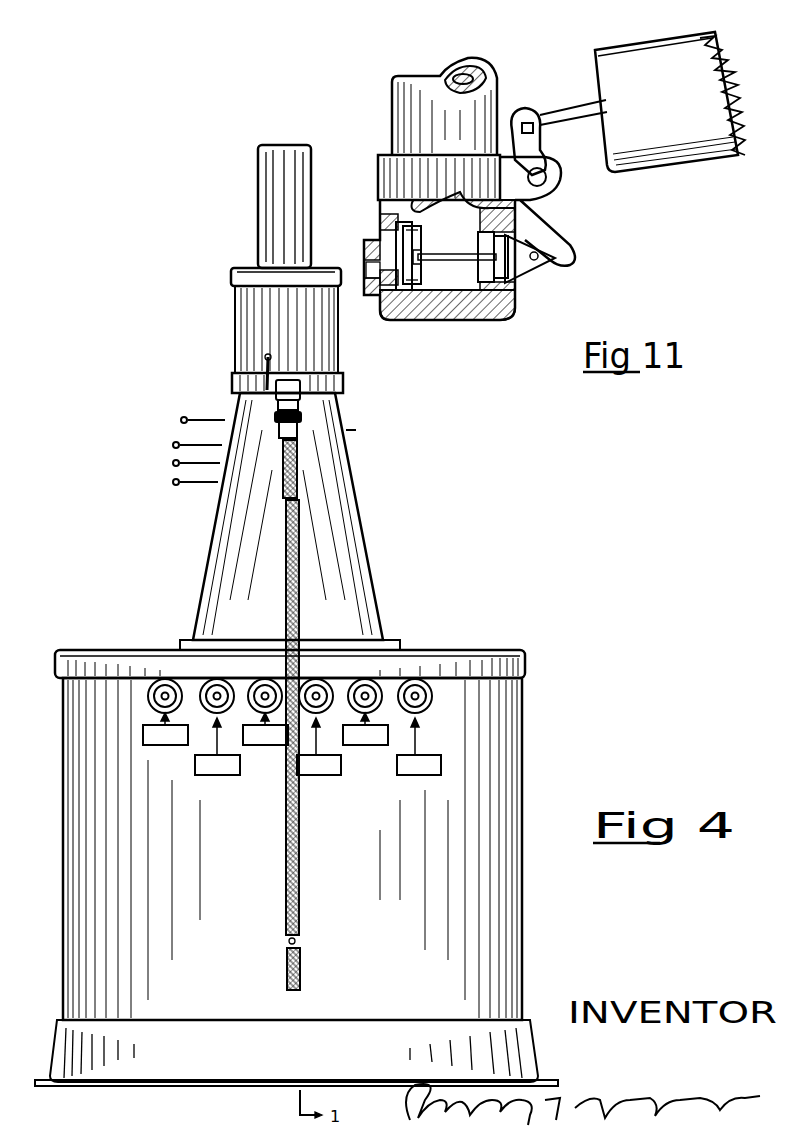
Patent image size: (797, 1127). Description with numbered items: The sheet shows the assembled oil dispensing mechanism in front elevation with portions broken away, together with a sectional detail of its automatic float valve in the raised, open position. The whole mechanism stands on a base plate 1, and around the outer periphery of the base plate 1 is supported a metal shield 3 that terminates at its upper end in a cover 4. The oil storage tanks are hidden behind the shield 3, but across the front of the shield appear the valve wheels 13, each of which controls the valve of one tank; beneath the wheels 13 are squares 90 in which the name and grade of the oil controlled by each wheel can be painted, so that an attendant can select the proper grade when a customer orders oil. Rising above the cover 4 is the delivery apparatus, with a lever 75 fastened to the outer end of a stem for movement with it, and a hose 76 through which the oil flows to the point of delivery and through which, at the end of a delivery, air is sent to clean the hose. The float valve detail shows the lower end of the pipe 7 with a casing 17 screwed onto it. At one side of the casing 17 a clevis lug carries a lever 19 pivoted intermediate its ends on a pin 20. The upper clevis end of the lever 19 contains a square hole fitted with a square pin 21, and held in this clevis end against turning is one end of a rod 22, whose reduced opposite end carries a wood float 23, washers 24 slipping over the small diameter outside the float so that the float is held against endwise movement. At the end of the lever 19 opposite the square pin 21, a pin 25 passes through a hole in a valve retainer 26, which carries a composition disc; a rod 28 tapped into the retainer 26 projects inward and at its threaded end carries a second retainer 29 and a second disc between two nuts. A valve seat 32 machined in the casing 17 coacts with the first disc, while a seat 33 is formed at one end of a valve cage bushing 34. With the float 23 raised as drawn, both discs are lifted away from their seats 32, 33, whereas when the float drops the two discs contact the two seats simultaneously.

In FIG. 4, the base plate 1 is at (290, 145).
In FIG. 4, the metal shield 3 is at (62, 838).
In FIG. 4, the cover 4 is at (53, 670).
In FIG. 11, the pipe 7 is at (392, 116).
In FIG. 4, the valve wheel 13 is at (380, 692).
In FIG. 11, the casing 17 is at (378, 166).
In FIG. 11, the lever 19 is at (568, 208).
In FIG. 11, the pin 20 is at (548, 177).
In FIG. 11, the square pin 21 is at (534, 133).
In FIG. 11, the rod 22 is at (550, 112).
In FIG. 11, the wood float 23 is at (678, 32).
In FIG. 11, the washers 24 is at (606, 100).
In FIG. 11, the pin 25 is at (540, 252).
In FIG. 11, the valve retainer 26 is at (528, 276).
In FIG. 11, the rod 28 is at (470, 248).
In FIG. 11, the second retainer 29 is at (420, 232).
In FIG. 11, the valve seat 32 is at (478, 270).
In FIG. 11, the seat 33 is at (390, 235).
In FIG. 11, the valve cage bushing 34 is at (366, 220).
In FIG. 4, the lever 75 is at (262, 358).
In FIG. 4, the hose 76 is at (299, 621).
In FIG. 4, the squares 90 is at (230, 774).